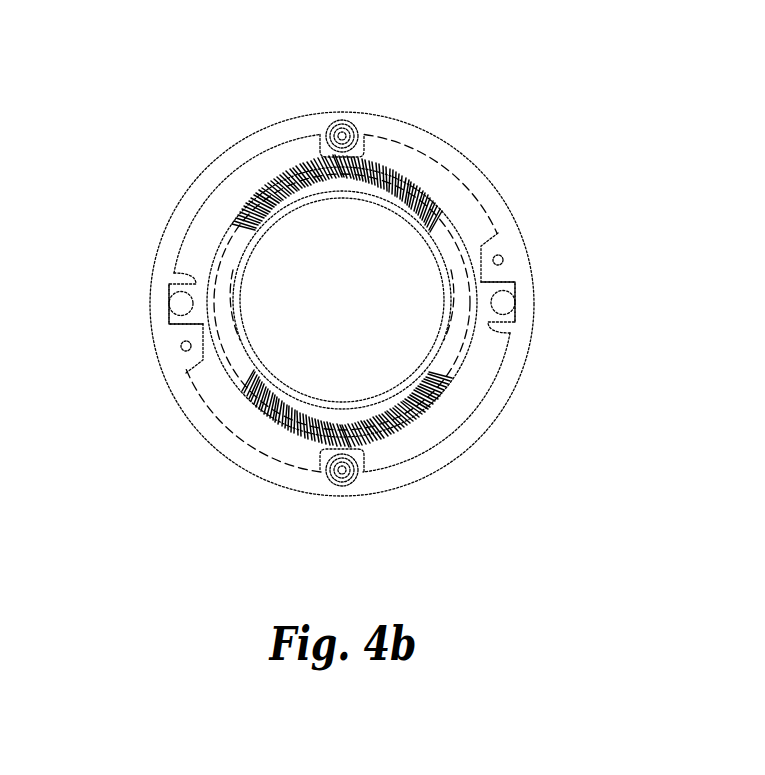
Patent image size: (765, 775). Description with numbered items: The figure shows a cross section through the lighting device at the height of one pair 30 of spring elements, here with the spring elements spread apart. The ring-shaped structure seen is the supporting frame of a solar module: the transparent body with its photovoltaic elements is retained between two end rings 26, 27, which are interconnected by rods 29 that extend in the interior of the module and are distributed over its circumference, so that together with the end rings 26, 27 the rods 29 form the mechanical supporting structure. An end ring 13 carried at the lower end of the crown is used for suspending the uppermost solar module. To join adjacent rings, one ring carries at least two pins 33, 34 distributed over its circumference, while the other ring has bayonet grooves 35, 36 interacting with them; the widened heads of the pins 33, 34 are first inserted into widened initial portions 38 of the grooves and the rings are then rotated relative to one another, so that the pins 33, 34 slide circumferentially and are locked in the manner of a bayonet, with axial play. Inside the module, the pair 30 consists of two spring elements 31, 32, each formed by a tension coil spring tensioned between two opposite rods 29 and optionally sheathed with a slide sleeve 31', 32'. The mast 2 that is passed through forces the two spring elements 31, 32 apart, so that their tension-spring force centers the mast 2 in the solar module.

The mast 2 is at (335, 344).
The end ring 13 is at (346, 295).
The end ring 27 is at (175, 282).
The end ring 26 is at (263, 467).
The rod 29 is at (343, 470).
The pair of spring elements 30 is at (283, 71).
The spring element 31 is at (287, 154).
The spring element 32 is at (388, 155).
The slide sleeve 31' is at (288, 353).
The slide sleeve 32' is at (399, 353).
The pin 33 is at (183, 349).
The pin 34 is at (502, 260).
The bayonet groove 35 is at (183, 317).
The bayonet groove 36 is at (505, 287).
The widened initial portion 38 is at (178, 300).